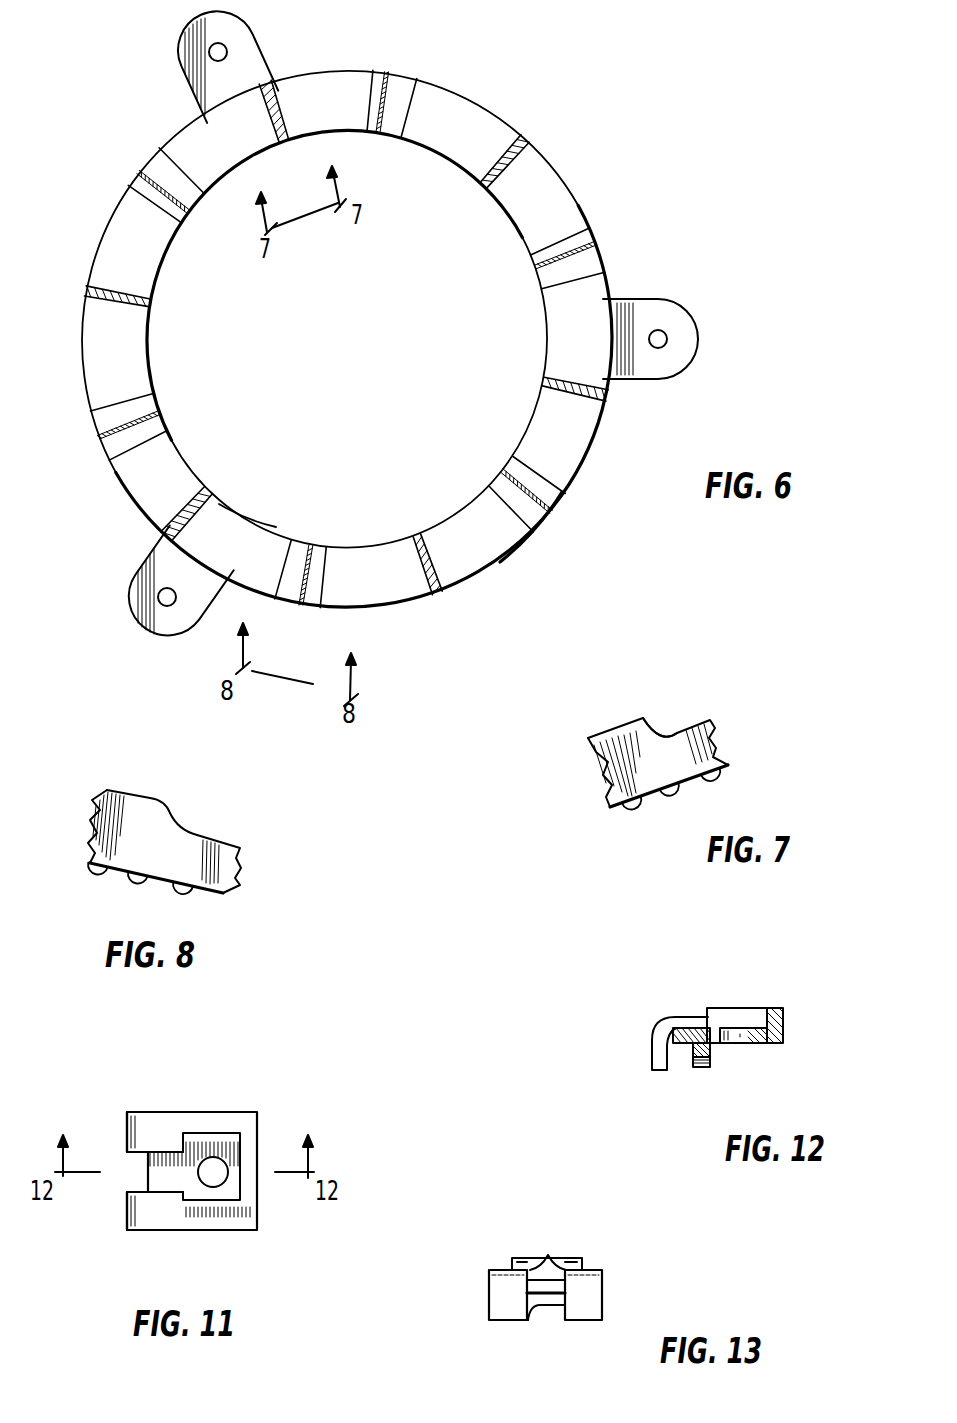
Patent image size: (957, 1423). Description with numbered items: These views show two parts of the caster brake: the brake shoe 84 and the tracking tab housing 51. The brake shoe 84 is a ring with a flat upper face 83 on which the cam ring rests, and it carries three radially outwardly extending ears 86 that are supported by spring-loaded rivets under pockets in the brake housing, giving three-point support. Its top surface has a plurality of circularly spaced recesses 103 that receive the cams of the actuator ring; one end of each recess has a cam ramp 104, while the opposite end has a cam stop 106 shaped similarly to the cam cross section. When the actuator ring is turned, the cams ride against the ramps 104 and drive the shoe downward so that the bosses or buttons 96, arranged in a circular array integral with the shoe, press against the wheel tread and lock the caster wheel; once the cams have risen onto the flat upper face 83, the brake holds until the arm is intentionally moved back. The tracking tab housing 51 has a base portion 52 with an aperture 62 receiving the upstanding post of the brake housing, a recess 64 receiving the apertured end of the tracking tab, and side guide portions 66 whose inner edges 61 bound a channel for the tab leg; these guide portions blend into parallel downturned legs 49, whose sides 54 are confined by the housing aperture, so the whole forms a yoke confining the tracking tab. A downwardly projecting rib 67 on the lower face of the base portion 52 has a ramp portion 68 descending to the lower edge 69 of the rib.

In FIG. 6, the recesses 103 is at (343, 82).
In FIG. 7, the recesses 103 is at (690, 720).
In FIG. 8, the recesses 103 is at (228, 845).
In FIG. 6, the cam ramp 104 is at (300, 550).
In FIG. 8, the cam ramp 104 is at (175, 812).
In FIG. 6, the flat upper face 83 is at (245, 530).
In FIG. 8, the flat upper face 83 is at (132, 796).
In FIG. 6, the brake shoe 84 is at (530, 536).
In FIG. 6, the ears 86 is at (680, 306).
In FIG. 7, the cam stop 106 is at (660, 716).
In FIG. 7, the bosses or buttons 96 is at (668, 797).
In FIG. 11, the downturned legs 49 is at (127, 1130).
In FIG. 12, the downturned legs 49 is at (650, 1058).
In FIG. 13, the downturned legs 49 is at (585, 1305).
In FIG. 11, the tracking tab housing 51 is at (237, 1087).
In FIG. 11, the base portion 52 is at (168, 1175).
In FIG. 12, the base portion 52 is at (688, 1030).
In FIG. 11, the inner edges 61 is at (135, 1160).
In FIG. 13, the inner edges 61 is at (548, 1256).
In FIG. 11, the aperture 62 is at (215, 1170).
In FIG. 12, the aperture 62 is at (740, 1036).
In FIG. 12, the recess 64 is at (727, 1013).
In FIG. 11, the side guide portions 66 is at (150, 1122).
In FIG. 13, the side guide portions 66 is at (497, 1270).
In FIG. 12, the rib 67 is at (712, 1050).
In FIG. 12, the ramp portion 68 is at (704, 1064).
In FIG. 13, the ramp portion 68 is at (540, 1318).
In FIG. 12, the lower edge 69 is at (699, 1070).
In FIG. 13, the lower edge 69 is at (506, 1320).
In FIG. 13, the sides 54 is at (603, 1313).